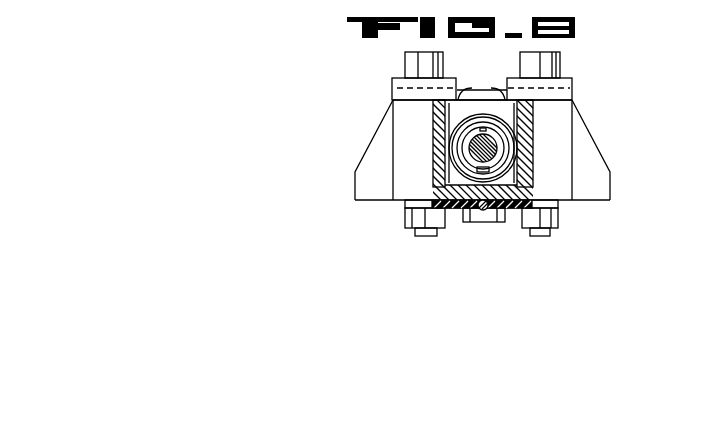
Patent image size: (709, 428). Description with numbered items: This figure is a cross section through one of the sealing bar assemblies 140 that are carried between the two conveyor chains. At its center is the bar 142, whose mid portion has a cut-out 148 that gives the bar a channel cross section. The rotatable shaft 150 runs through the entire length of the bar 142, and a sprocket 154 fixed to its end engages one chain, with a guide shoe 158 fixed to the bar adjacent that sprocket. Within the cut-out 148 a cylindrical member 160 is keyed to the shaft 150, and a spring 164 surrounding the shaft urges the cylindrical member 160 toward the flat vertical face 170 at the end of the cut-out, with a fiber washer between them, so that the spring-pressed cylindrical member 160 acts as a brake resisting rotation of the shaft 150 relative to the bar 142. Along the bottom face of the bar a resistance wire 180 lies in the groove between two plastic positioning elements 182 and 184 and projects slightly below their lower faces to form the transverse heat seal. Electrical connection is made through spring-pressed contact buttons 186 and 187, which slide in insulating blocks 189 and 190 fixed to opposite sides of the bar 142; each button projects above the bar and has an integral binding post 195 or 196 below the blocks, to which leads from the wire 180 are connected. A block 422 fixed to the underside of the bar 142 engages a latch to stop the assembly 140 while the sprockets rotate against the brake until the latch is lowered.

The sealing bar assembly 140 is at (584, 86).
The bar 142 is at (530, 112).
The cut-out 148 is at (452, 100).
The rotatable shaft 150 is at (495, 153).
The sprocket 154 is at (462, 88).
The guide shoe 158 is at (474, 96).
The cylindrical member 160 is at (513, 137).
The spring 164 is at (502, 167).
The flat vertical face 170 is at (445, 143).
The resistance wire 180 is at (483, 212).
The plastic positioning element 182 is at (535, 205).
The plastic positioning element 184 is at (428, 205).
The contact button 186 is at (418, 62).
The contact button 187 is at (553, 58).
The insulating block 189 is at (397, 122).
The insulating block 190 is at (563, 142).
The binding post 195 is at (418, 236).
The binding post 196 is at (548, 236).
The block 422 is at (468, 215).